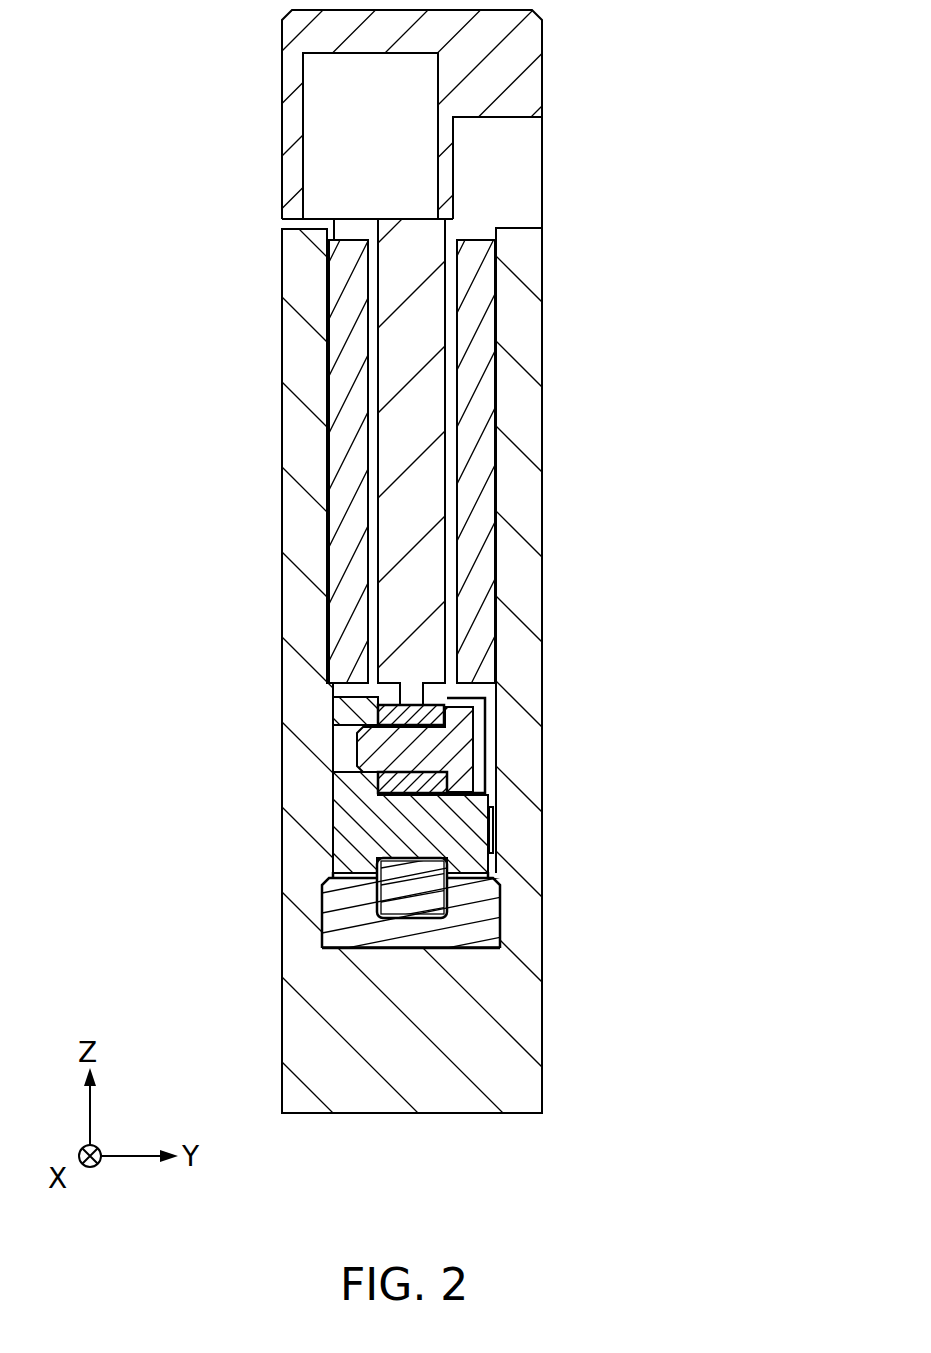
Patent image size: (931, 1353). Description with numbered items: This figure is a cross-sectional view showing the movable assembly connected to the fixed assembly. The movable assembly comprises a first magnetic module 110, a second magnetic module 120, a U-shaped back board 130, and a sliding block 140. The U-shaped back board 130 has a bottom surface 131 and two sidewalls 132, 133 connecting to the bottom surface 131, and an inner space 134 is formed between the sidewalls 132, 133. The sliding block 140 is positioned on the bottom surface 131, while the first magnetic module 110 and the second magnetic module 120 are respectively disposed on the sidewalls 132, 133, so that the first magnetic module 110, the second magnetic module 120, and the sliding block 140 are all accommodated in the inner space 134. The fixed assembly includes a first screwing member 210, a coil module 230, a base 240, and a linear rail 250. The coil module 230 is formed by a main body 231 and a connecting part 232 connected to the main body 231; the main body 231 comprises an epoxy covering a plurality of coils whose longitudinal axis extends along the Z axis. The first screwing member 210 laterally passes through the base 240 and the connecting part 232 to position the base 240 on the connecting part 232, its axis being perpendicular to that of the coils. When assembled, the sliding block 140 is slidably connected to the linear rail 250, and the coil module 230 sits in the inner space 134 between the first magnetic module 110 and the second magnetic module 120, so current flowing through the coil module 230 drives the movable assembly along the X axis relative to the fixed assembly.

The first magnetic module 110 is at (480, 458).
The second magnetic module 120 is at (345, 465).
The U-shaped back board 130 is at (477, 1030).
The bottom surface 131 is at (357, 947).
The sidewall 132 is at (494, 277).
The sidewall 133 is at (330, 277).
The inner space 134 is at (477, 692).
The sliding block 140 is at (477, 913).
The first screwing member 210 is at (453, 748).
The coil module 230 is at (456, 511).
The main body 231 is at (410, 598).
The connecting part 232 is at (322, 754).
The base 240 is at (453, 835).
The linear rail 250 is at (412, 888).